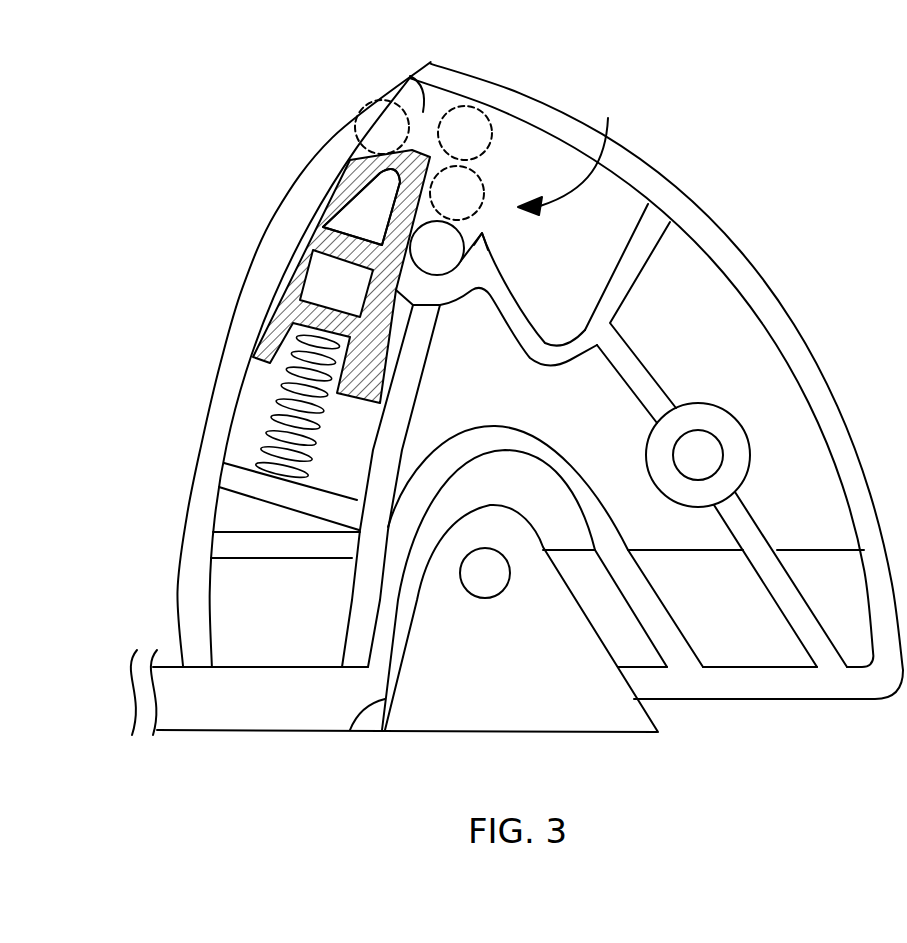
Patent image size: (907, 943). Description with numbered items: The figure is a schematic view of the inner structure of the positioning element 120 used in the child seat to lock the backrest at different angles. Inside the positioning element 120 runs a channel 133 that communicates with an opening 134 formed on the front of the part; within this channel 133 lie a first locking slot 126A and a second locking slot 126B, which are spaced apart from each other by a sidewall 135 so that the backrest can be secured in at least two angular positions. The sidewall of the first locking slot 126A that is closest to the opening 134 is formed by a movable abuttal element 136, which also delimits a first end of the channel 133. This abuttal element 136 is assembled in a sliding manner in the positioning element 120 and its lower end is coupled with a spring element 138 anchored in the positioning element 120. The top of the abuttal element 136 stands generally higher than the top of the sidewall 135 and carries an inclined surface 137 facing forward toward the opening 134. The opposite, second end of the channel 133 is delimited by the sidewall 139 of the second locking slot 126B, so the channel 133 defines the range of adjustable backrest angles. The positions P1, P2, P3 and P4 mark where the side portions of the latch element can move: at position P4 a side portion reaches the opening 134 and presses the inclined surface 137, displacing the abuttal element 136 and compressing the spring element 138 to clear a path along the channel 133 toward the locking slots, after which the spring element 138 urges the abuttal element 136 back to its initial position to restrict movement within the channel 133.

The positioning element 120 is at (780, 290).
The first locking slot 126A is at (483, 288).
The second locking slot 126B is at (547, 350).
The channel 133 is at (573, 152).
The opening 134 is at (423, 110).
The sidewall 135 is at (482, 236).
The abuttal element 136 is at (303, 220).
The inclined surface 137 is at (350, 153).
The spring element 138 is at (270, 430).
The sidewall of the locking slot 126B 139 is at (693, 210).
The position P1 is at (424, 262).
The position P2 is at (444, 206).
The position P3 is at (452, 146).
The position P4 is at (367, 107).